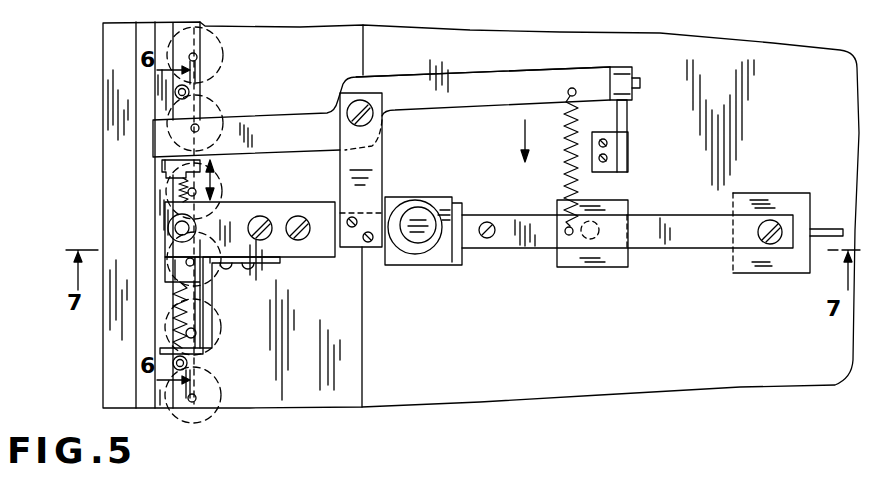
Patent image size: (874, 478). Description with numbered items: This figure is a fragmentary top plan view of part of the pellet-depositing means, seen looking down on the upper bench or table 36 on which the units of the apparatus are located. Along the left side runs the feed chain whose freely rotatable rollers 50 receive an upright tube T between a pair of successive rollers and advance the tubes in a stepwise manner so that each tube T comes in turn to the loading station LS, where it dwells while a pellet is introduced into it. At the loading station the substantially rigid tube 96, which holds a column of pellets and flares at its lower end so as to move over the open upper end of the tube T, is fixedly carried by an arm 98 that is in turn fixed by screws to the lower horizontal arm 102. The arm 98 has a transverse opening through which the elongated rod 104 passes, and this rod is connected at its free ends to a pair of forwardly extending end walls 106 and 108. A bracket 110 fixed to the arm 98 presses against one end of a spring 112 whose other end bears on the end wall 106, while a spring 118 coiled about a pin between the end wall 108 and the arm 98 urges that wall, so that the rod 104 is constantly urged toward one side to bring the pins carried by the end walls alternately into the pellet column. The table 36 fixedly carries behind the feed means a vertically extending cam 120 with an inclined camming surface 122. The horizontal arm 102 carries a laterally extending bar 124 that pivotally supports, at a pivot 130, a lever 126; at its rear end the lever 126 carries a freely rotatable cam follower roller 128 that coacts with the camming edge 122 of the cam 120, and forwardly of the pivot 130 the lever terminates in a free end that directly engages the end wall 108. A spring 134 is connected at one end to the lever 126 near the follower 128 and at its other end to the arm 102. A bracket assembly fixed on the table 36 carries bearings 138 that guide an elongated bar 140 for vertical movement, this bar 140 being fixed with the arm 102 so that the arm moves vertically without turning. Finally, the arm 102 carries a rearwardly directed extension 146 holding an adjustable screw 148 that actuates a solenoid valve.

The bench or table 36 is at (665, 344).
The rollers 50 is at (164, 408).
The rigid tube 96 is at (218, 222).
The arm 98 is at (300, 206).
The lower horizontal arm 102 is at (467, 250).
The elongated rod 104 is at (204, 157).
The end wall 106 is at (167, 262).
The end wall 108 is at (165, 165).
The bracket 110 is at (218, 285).
The spring 112 is at (176, 330).
The spring 118 is at (176, 188).
The cam 120 is at (628, 138).
The camming surface 122 is at (630, 96).
The laterally extending bar 124 is at (372, 167).
The lever 126 is at (484, 76).
The cam follower roller 128 is at (618, 68).
The pivot 130 is at (364, 100).
The spring 134 is at (566, 180).
The bearings 138 is at (425, 203).
The elongated bar 140 is at (413, 247).
The rearwardly directed extension 146 is at (520, 250).
The adjustable screw 148 is at (778, 224).
The tube T is at (182, 92).
The loading station LS is at (92, 113).